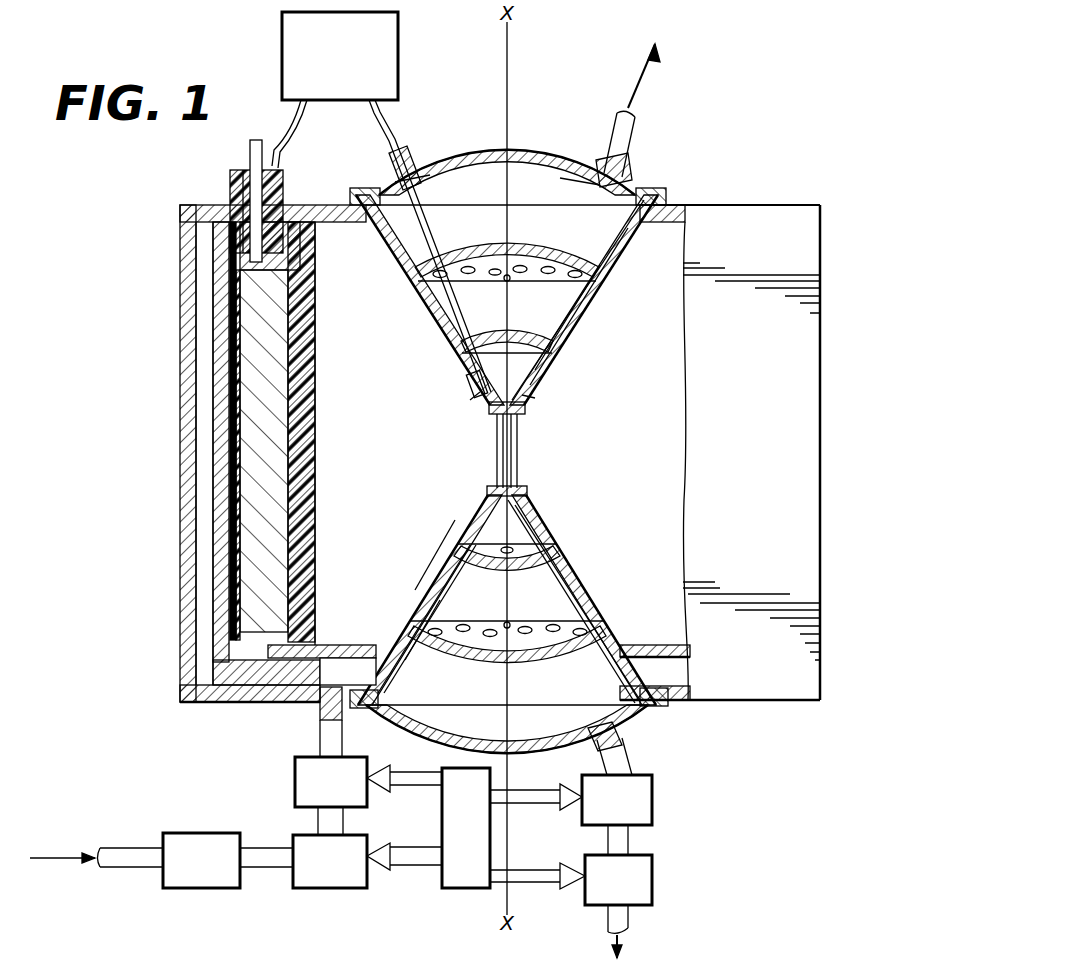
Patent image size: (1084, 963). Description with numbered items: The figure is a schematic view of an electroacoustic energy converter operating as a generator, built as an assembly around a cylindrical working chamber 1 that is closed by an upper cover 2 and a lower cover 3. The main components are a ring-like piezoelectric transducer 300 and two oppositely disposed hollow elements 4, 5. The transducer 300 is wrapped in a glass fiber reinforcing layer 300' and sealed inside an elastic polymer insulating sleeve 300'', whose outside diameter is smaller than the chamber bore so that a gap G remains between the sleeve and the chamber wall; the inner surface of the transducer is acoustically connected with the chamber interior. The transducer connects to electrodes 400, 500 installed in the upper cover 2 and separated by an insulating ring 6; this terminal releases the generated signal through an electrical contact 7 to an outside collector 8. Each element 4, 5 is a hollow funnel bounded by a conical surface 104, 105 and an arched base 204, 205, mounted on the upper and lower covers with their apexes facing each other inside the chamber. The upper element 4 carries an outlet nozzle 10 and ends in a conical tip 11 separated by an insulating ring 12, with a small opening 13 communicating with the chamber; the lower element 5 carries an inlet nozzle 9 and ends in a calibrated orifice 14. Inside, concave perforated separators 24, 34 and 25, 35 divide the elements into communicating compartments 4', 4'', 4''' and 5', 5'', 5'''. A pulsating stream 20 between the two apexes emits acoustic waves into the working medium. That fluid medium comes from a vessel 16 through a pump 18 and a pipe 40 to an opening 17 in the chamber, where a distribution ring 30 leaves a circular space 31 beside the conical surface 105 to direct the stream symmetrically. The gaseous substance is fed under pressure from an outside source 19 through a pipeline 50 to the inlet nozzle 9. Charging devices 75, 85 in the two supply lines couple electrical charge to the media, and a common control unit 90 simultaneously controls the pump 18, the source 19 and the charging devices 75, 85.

The working chamber 1 is at (180, 578).
The upper cover 2 is at (185, 210).
The lower cover 3 is at (218, 705).
The gap G is at (200, 238).
The insulating sleeve 300'' is at (175, 442).
The glass fiber reinforcing layer 300' is at (179, 431).
The ring-like piezoelectric transducer 300 is at (222, 453).
The electrode 400 is at (256, 152).
The electrode 500 is at (238, 186).
The insulating ring 6 is at (244, 172).
The electrical contact 7 is at (302, 130).
The outside collector 8 is at (398, 62).
The outlet nozzle 10 is at (606, 148).
The arched base 204 is at (480, 160).
The conical surface 104 is at (432, 318).
The upper element 4 is at (508, 296).
The compartment 4' is at (560, 333).
The compartment 4'' is at (579, 306).
The compartment 4''' is at (583, 300).
The concave perforated separator 34 is at (522, 250).
The concave perforated separator 24 is at (510, 338).
The conical tip 11 is at (488, 412).
The insulating ring 12 is at (530, 402).
The small opening 13 is at (493, 416).
The stream 20 is at (518, 460).
The calibrated orifice 14 is at (520, 488).
The lower element 5 is at (507, 600).
The compartment 5' is at (427, 594).
The compartment 5'' is at (577, 602).
The compartment 5''' is at (581, 601).
The conical surface 105 is at (428, 580).
The concave perforated separator 25 is at (508, 575).
The concave perforated separator 35 is at (512, 665).
The arched base 205 is at (565, 752).
The inlet nozzle 9 is at (622, 742).
The pipeline 50 is at (630, 770).
The distribution ring 30 is at (342, 645).
The circular space 31 is at (384, 645).
The opening 17 is at (318, 712).
The pipe 40 is at (320, 748).
The charging device 75 is at (300, 790).
The pump 18 is at (305, 870).
The vessel 16 is at (180, 842).
The common control unit 90 is at (455, 878).
The charging device 85 is at (635, 805).
The outside source 19 is at (635, 878).